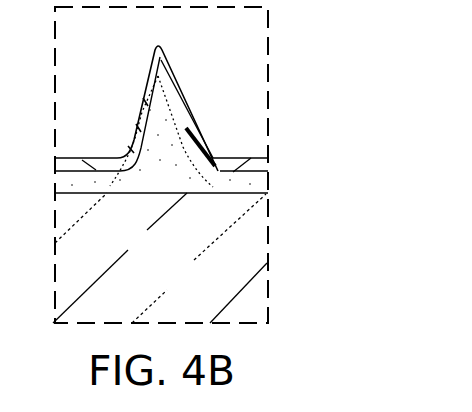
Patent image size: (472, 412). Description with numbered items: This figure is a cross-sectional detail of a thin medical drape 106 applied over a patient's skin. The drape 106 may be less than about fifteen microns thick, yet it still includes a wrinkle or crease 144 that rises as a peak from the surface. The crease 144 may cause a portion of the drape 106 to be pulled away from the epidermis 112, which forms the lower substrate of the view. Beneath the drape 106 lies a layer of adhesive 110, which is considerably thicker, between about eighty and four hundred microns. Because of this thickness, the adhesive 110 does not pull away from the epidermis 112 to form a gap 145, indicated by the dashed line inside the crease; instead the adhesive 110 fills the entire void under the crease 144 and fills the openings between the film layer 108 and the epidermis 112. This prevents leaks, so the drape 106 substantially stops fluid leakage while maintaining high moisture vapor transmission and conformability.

The drape 106 is at (197, 82).
The crease 144 is at (146, 80).
The film layer 108 is at (105, 159).
The adhesive 110 is at (237, 158).
The epidermis 112 is at (184, 273).
The gap 145 is at (160, 152).